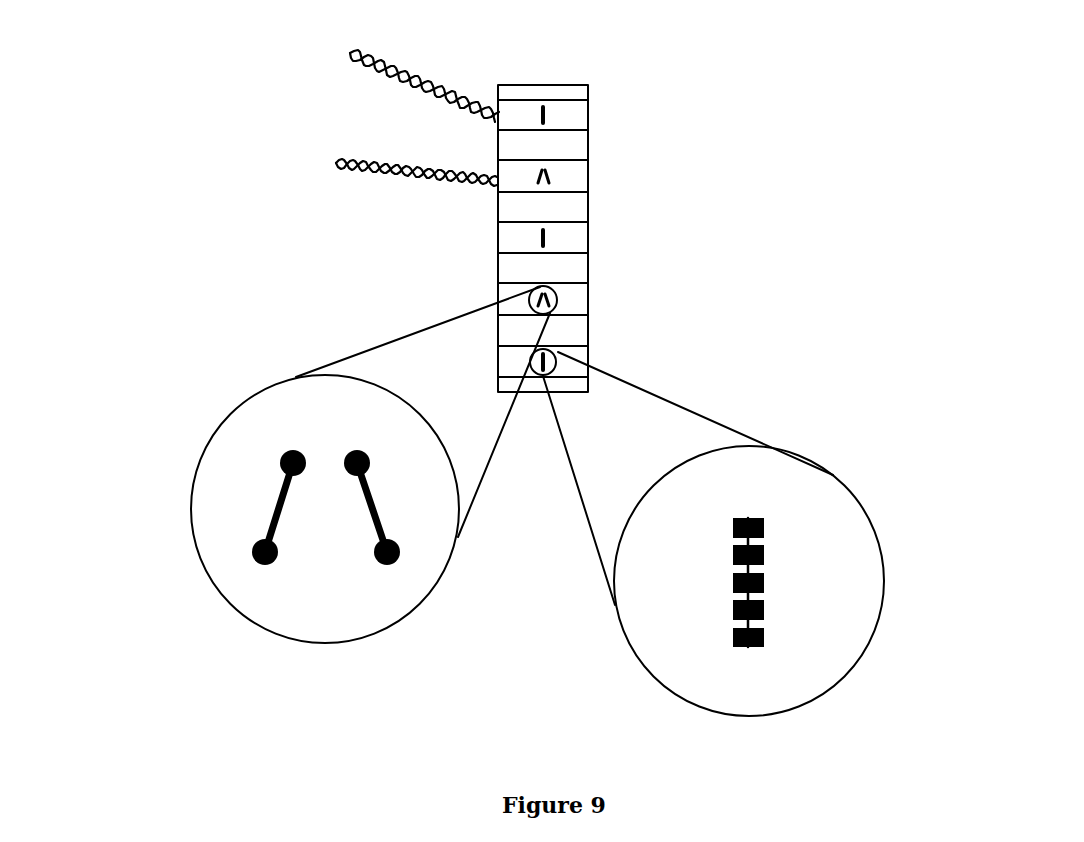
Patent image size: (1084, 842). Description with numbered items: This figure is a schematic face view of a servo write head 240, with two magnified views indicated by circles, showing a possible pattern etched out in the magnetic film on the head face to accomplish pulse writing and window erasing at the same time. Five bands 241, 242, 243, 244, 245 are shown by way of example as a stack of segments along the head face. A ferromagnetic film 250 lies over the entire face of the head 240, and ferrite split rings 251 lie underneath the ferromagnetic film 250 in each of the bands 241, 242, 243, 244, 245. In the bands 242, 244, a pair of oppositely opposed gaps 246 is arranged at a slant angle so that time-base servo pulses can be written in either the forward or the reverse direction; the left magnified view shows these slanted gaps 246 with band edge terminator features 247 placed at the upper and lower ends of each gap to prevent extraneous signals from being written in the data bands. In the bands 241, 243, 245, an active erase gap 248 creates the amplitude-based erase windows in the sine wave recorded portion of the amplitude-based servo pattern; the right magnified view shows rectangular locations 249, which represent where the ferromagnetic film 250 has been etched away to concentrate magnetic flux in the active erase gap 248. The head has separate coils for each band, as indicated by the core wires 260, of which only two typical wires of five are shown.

The servo write head 240 is at (532, 84).
The band 241 is at (497, 141).
The band 242 is at (498, 190).
The band 243 is at (507, 243).
The band 244 is at (583, 303).
The band 245 is at (507, 362).
The oppositely opposed gaps 246 is at (367, 520).
The band edge terminator features 247 is at (256, 550).
The active erase gap 248 is at (740, 620).
The rectangular locations 249 is at (770, 513).
The ferromagnetic film 250 is at (586, 224).
The ferrite split rings 251 is at (585, 109).
The core wires 260 is at (357, 162).